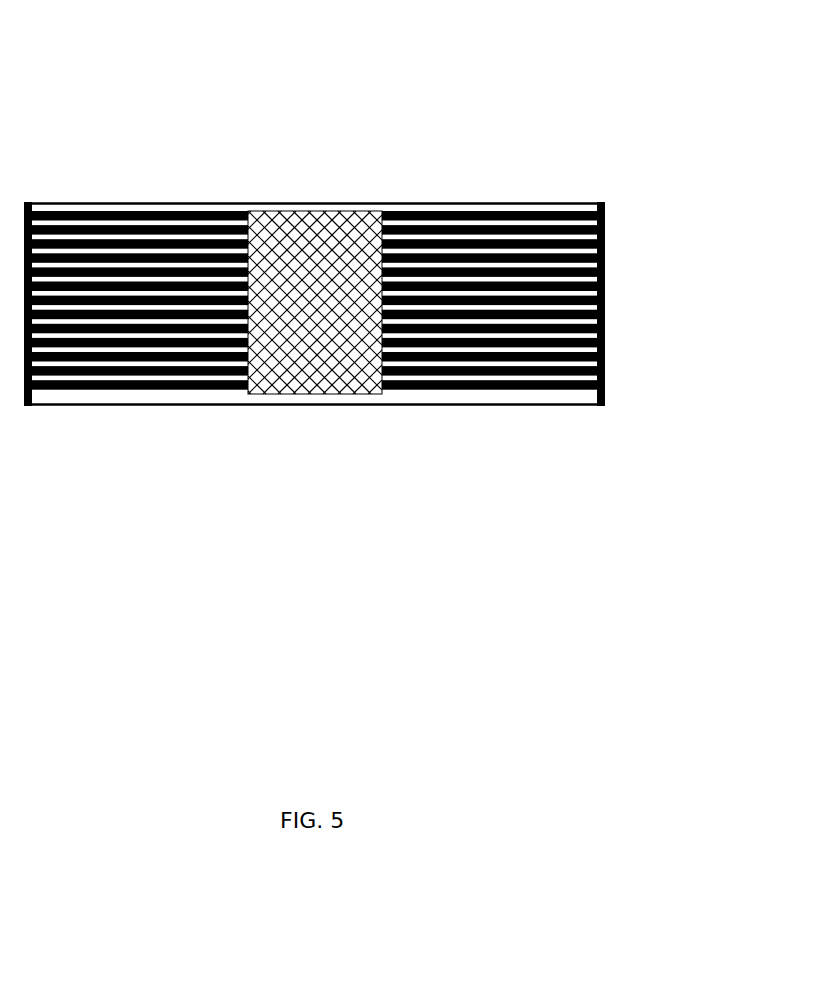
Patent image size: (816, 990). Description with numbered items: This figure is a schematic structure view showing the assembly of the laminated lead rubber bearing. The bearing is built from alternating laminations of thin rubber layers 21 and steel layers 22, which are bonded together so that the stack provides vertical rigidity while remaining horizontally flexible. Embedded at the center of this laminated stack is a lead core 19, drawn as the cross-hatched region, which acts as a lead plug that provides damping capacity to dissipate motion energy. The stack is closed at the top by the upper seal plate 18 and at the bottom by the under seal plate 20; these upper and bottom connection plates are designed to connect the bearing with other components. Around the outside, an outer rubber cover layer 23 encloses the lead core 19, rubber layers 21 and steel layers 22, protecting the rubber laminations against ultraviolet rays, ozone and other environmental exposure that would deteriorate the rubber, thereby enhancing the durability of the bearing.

The upper seal plate 18 is at (273, 202).
The lead core 19 is at (315, 293).
The under seal plate 20 is at (310, 406).
The rubber layers 21 is at (390, 212).
The steel layers 22 is at (457, 210).
The outer rubber cover layer 23 is at (600, 405).